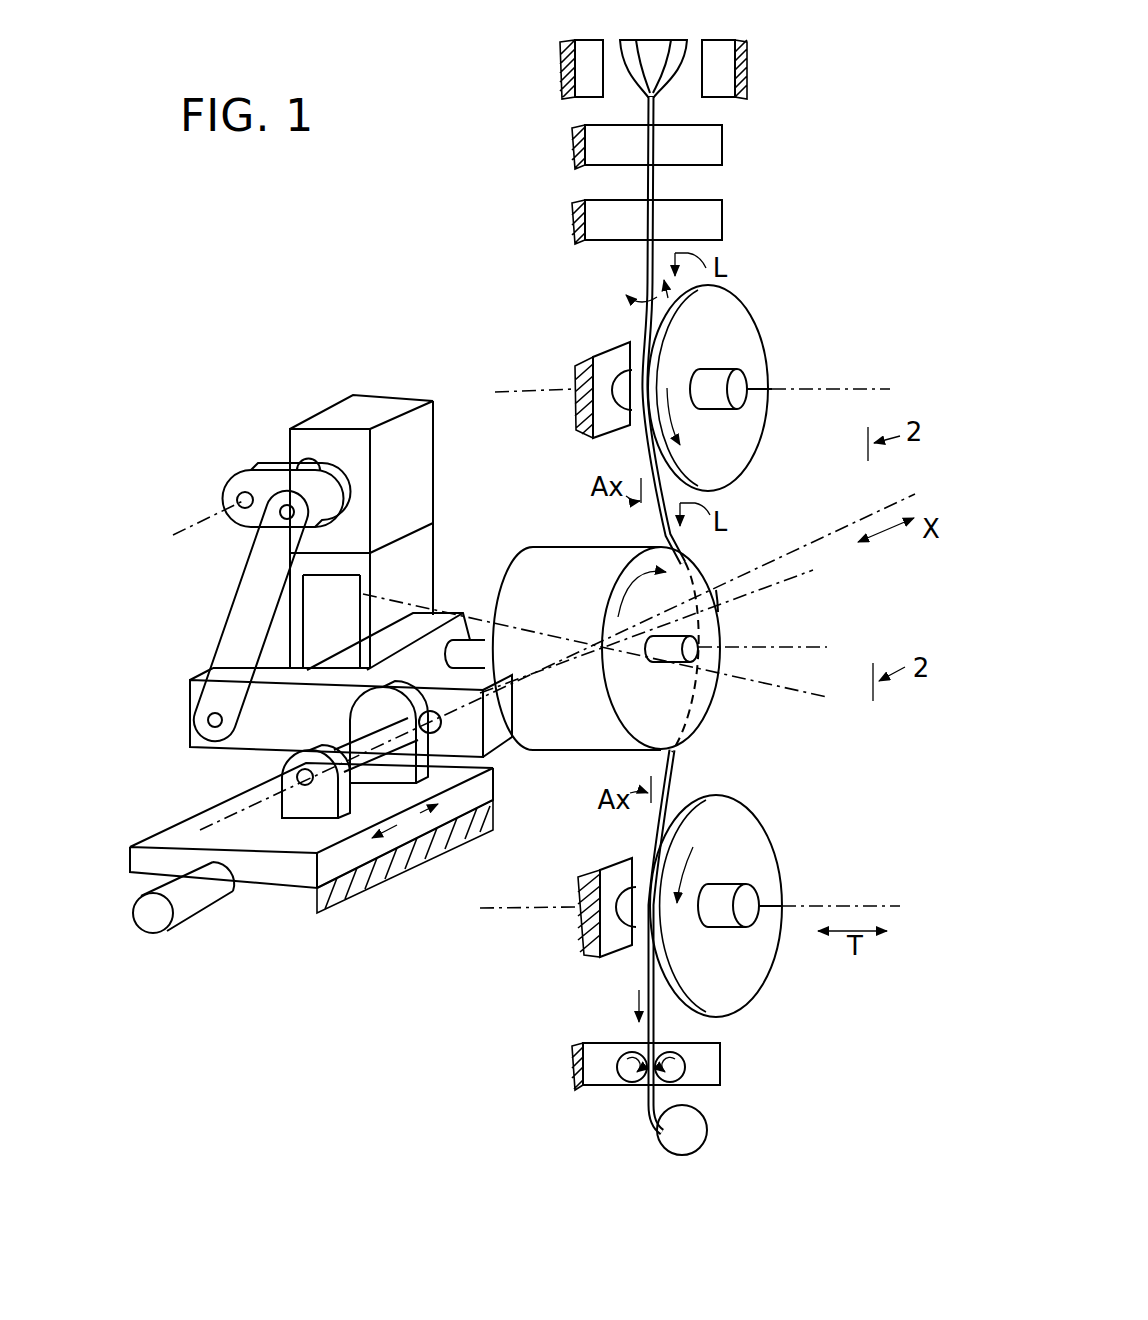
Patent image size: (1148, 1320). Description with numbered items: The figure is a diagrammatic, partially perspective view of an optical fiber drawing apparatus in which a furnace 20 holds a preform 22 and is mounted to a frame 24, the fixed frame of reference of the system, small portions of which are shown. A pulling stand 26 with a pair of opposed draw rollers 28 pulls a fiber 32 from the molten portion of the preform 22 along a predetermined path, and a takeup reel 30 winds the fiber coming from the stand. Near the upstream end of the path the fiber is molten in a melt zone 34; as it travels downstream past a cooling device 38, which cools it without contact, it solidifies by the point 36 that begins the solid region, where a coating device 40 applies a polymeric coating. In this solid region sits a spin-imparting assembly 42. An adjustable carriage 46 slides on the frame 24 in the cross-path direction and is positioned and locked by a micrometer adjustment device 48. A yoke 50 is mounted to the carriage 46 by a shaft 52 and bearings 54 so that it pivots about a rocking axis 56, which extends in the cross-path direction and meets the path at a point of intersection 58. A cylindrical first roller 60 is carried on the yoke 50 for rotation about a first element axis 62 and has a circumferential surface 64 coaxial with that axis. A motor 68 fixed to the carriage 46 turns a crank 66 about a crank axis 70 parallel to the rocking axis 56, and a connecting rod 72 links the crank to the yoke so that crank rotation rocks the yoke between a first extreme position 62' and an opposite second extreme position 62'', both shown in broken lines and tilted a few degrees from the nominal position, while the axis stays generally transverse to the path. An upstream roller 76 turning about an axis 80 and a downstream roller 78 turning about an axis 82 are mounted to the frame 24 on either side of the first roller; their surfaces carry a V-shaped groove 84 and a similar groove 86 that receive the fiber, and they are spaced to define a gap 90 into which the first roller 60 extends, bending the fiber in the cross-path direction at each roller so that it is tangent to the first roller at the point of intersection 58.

The furnace 20 is at (545, 104).
The preform 22 is at (688, 40).
The frame 24 is at (560, 78).
The pulling stand 26 is at (727, 1056).
The draw rollers 28 is at (625, 1081).
The takeup reel 30 is at (657, 1144).
The fiber 32 is at (642, 262).
The melt zone 34 is at (657, 113).
The point 36 is at (656, 188).
The cooling device 38 is at (724, 148).
The coating device 40 is at (724, 218).
The spin-imparting assembly 42 is at (345, 642).
The adjustable carriage 46 is at (496, 772).
The micrometer adjustment device 48 is at (201, 921).
The yoke 50 is at (256, 745).
The shaft 52 is at (362, 727).
The bearings 54 is at (284, 808).
The rocking axis 56 is at (841, 530).
The point of intersection 58 is at (728, 600).
The first roller 60 is at (577, 748).
The first element axis 62 is at (783, 628).
The first extreme position 62' is at (678, 630).
The second extreme position 62'' is at (601, 669).
The circumferential surface 64 is at (556, 562).
The crank 66 is at (259, 470).
The motor 68 is at (324, 411).
The crank axis 70 is at (193, 530).
The connecting rod 72 is at (219, 640).
The upstream roller 76 is at (761, 300).
The downstream roller 78 is at (789, 999).
The axis 80 is at (856, 387).
The axis 82 is at (826, 906).
The V-shaped groove 84 is at (702, 490).
The groove 86 is at (690, 795).
The gap 90 is at (604, 524).